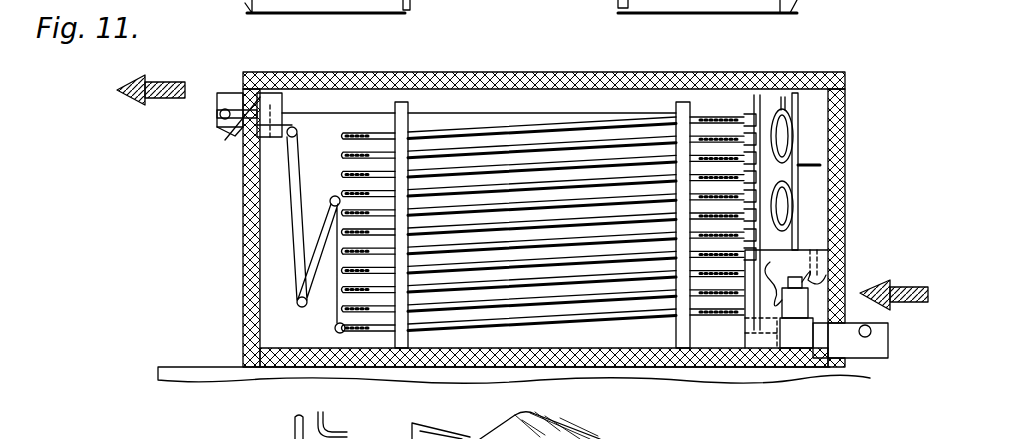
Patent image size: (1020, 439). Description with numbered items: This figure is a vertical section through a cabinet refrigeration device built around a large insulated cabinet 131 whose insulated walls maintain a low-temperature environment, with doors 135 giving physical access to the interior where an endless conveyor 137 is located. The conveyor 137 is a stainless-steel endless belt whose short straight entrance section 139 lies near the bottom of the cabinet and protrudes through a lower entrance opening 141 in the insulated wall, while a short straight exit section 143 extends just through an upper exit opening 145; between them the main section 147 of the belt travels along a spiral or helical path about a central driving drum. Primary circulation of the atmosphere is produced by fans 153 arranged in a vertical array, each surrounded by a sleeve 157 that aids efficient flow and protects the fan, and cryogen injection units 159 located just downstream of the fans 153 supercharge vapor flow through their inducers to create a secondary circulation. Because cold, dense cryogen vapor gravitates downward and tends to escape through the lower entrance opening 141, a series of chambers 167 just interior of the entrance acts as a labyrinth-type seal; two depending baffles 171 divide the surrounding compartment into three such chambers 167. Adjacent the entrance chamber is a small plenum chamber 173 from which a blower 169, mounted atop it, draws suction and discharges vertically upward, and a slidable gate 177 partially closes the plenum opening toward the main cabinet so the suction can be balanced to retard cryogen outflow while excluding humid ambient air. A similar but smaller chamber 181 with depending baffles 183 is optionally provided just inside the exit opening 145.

The insulated cabinet 131 is at (483, 3).
The doors 135 is at (335, 8).
The endless conveyor 137 is at (570, 115).
The straight entrance section 139 is at (855, 358).
The lower entrance opening 141 is at (838, 300).
The straight exit section 143 is at (328, 120).
The upper exit opening 145 is at (240, 97).
The main section 147 is at (513, 0).
The fans 153 is at (780, 128).
The sleeve 157 is at (793, 202).
The cryogen injection units 159 is at (760, 110).
The chambers 167 is at (838, 262).
The blower 169 is at (798, 270).
The depending baffles 171 is at (775, 290).
The plenum chamber 173 is at (760, 348).
The slidable gate 177 is at (800, 340).
The chamber 181 is at (281, 90).
The depending baffles 183 is at (243, 128).